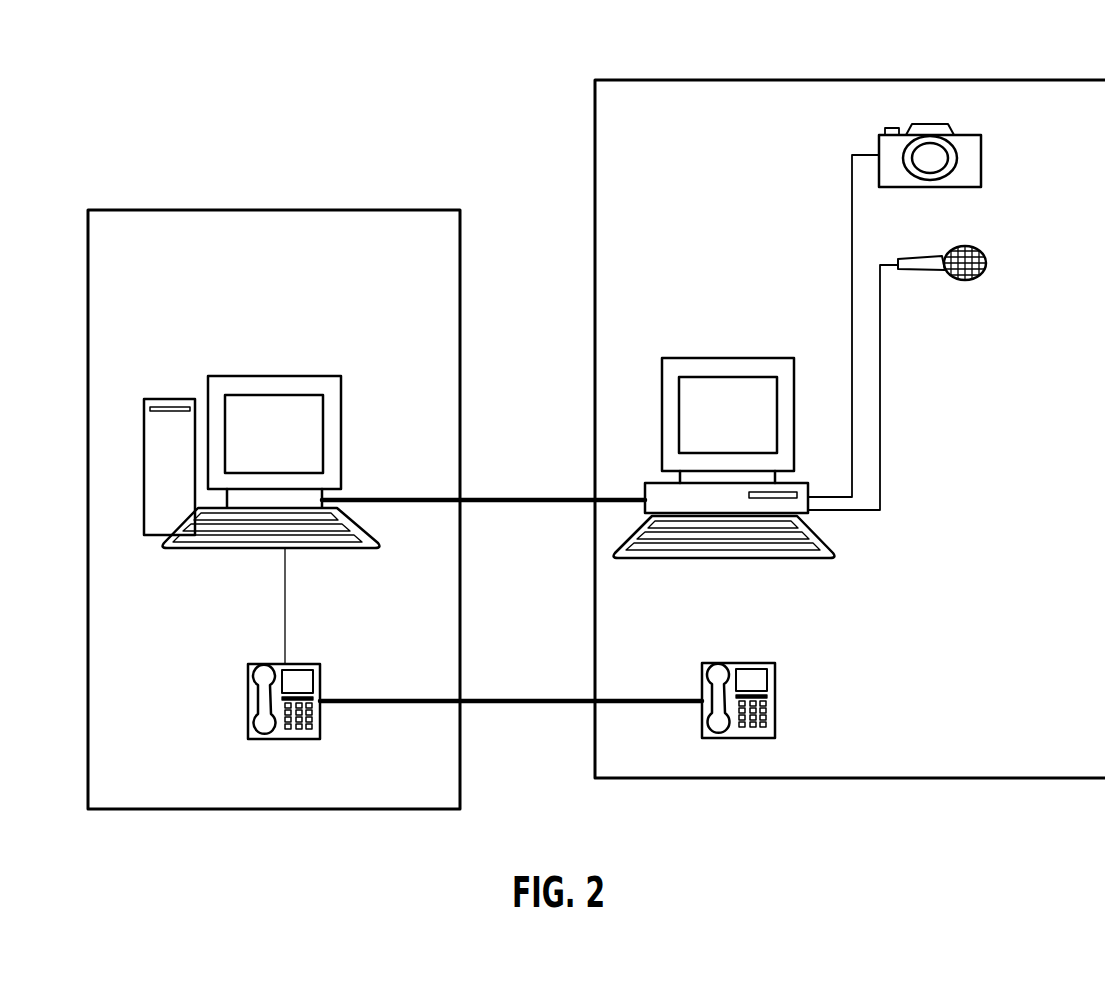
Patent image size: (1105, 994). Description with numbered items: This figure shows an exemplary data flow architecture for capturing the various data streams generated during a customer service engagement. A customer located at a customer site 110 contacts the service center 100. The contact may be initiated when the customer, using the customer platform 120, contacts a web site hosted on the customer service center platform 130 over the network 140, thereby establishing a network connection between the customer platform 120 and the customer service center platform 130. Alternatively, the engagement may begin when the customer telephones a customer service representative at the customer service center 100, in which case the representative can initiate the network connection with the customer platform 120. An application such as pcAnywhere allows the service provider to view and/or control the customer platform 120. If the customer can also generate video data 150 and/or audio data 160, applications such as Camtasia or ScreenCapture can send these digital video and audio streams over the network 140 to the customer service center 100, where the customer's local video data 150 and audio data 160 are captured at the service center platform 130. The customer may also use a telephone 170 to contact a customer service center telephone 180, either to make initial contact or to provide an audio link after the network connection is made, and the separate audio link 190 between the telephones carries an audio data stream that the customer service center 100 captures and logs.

The service center 100 is at (144, 210).
The customer site 110 is at (636, 80).
The customer platform 120 is at (720, 358).
The customer service center platform 130 is at (341, 399).
The network 140 is at (529, 498).
The video data 150 is at (981, 150).
The audio data 160 is at (986, 263).
The telephone 170 is at (775, 690).
The customer service center telephone 180 is at (248, 699).
The voice communication link 190 is at (529, 698).